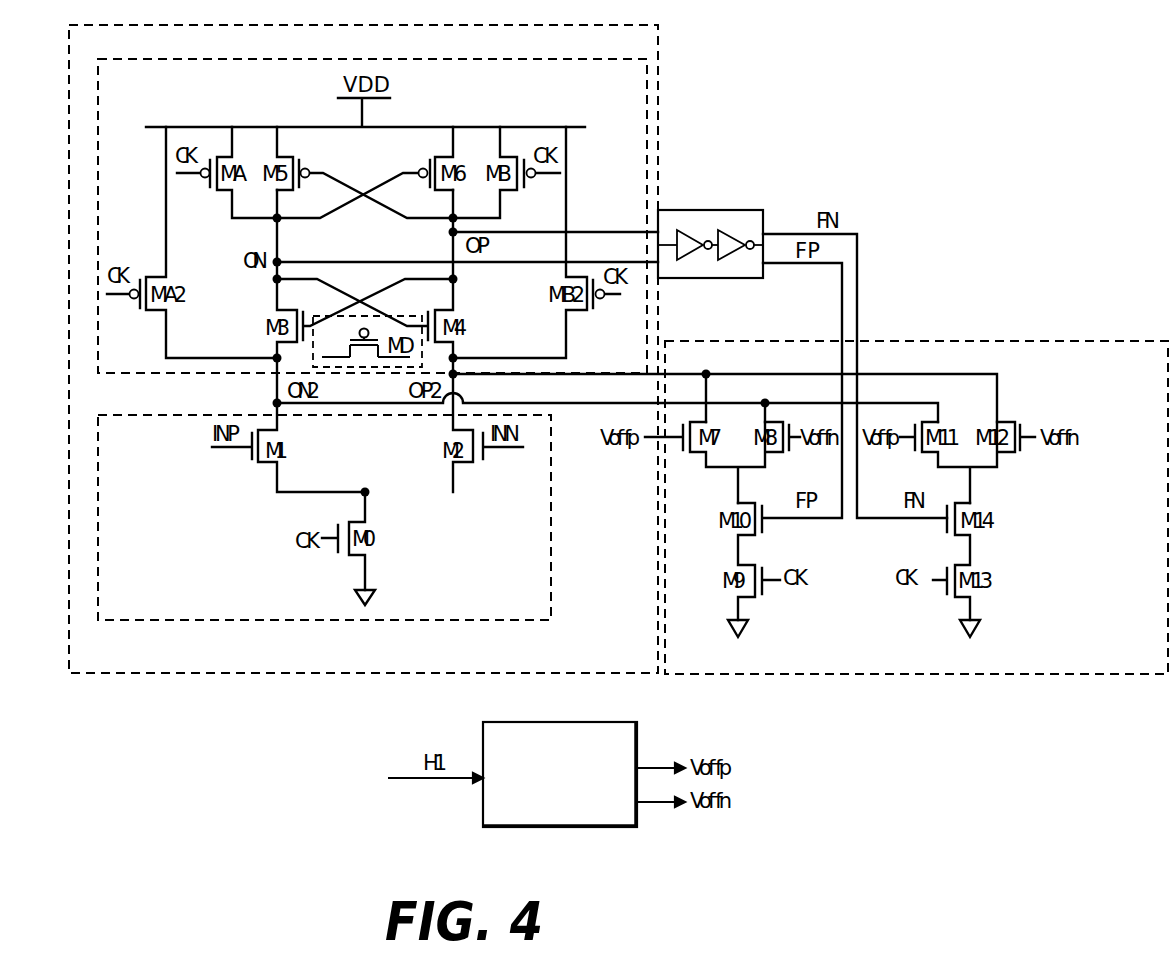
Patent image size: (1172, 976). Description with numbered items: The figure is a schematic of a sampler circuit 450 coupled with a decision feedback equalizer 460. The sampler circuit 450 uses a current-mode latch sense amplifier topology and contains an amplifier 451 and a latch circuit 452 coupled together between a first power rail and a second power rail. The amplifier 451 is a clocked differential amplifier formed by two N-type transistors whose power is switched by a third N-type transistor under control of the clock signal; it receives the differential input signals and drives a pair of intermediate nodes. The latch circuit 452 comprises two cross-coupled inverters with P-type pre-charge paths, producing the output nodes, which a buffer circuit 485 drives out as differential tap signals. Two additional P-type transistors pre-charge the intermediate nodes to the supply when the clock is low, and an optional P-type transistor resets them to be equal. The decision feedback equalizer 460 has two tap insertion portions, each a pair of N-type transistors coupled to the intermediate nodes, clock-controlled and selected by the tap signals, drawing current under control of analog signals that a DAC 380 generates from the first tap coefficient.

The sampler circuit 450 is at (637, 54).
The latch circuit 452 is at (637, 92).
The amplifier 451 is at (522, 598).
The decision feedback equalizer 460 is at (1153, 650).
The buffer circuit 485 is at (741, 210).
The DAC 380 is at (575, 799).